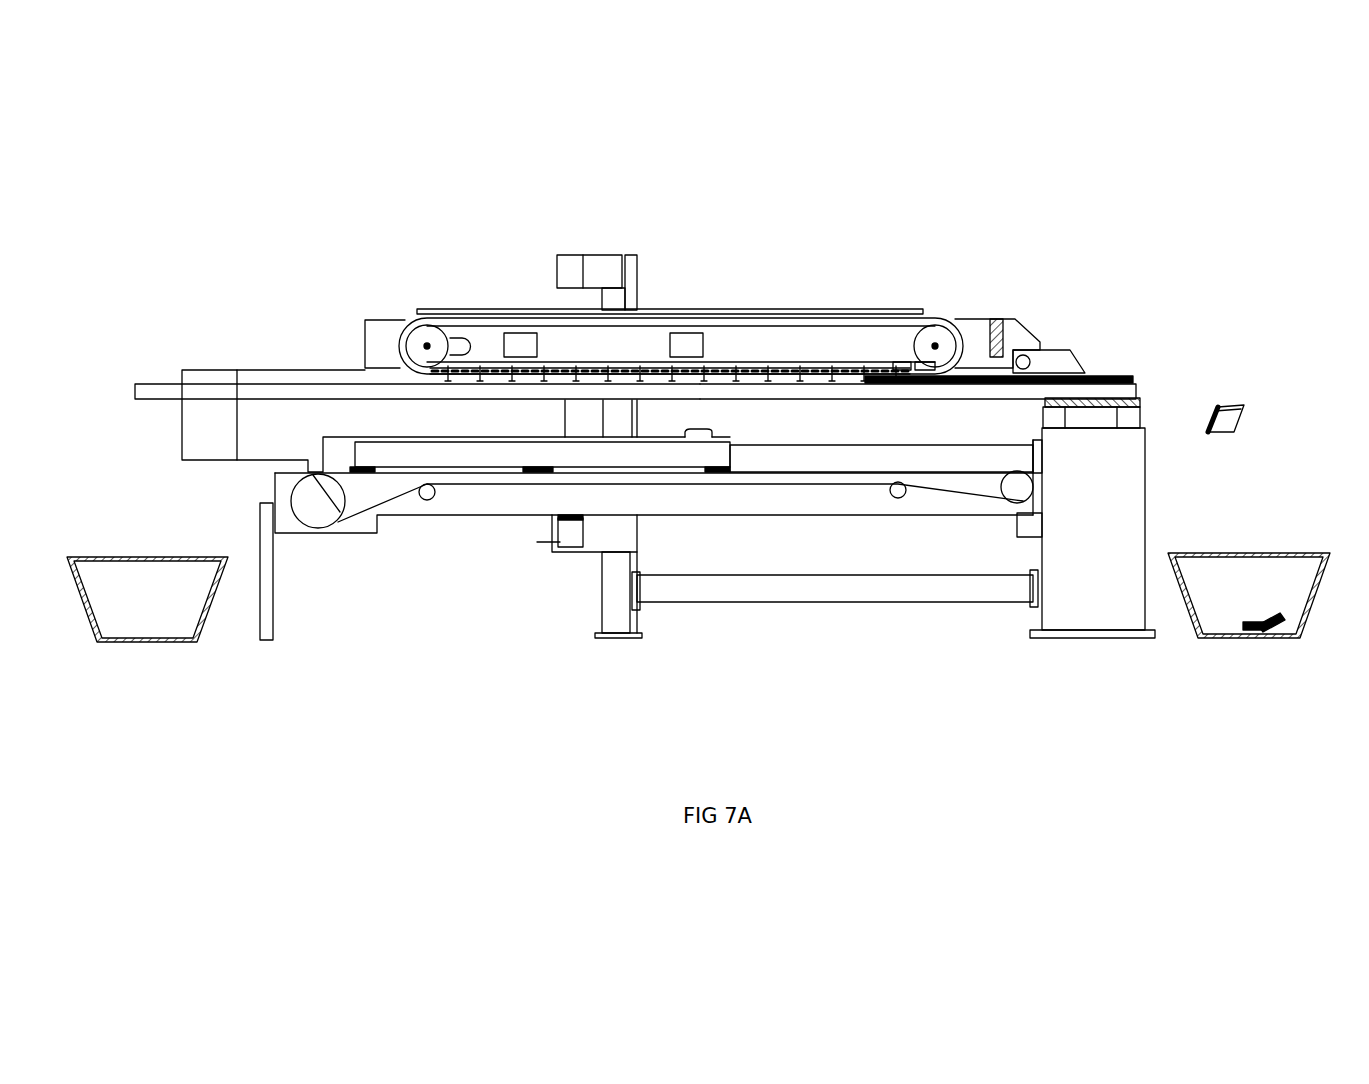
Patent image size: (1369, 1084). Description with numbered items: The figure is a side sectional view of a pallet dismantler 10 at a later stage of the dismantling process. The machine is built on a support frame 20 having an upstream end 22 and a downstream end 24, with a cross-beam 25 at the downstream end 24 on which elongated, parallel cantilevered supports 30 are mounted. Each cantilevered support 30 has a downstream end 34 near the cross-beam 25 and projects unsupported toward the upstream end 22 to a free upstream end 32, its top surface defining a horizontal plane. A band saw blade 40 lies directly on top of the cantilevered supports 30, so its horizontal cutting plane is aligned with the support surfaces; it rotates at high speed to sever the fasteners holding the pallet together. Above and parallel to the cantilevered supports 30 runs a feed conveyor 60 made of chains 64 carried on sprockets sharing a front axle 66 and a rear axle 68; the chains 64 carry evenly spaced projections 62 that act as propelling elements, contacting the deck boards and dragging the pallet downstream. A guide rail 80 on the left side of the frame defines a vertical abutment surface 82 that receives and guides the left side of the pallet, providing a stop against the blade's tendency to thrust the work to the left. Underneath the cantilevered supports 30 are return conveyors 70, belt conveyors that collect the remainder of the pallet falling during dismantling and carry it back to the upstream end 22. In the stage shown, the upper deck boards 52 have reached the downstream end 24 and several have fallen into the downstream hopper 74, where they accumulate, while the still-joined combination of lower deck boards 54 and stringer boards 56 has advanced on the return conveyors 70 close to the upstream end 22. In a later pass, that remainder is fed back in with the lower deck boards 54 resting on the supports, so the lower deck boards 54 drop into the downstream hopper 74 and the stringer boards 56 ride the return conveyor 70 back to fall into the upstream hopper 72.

The pallet dismantler 10 is at (1138, 277).
The support frame 20 is at (826, 610).
The upstream end 22 is at (260, 560).
The downstream end 24 is at (1145, 470).
The cross-beam 25 is at (1140, 410).
The cantilevered supports 30 is at (702, 393).
The upstream end of cantilevered support 32 is at (133, 392).
The downstream end of cantilevered support 34 is at (1140, 390).
The band saw blade 40 is at (558, 380).
The upper deck boards 52 is at (1105, 374).
The lower deck boards 54 is at (352, 467).
The stringer boards 56 is at (473, 460).
The feed conveyor 60 is at (787, 308).
The projections 62 is at (863, 377).
The chains 64 is at (913, 380).
The front axle 66 is at (427, 346).
The rear axle 68 is at (935, 346).
The return conveyors 70 is at (828, 482).
The upstream hopper 72 is at (210, 622).
The downstream hopper 74 is at (1192, 620).
The guide rail 80 is at (208, 456).
The vertical abutment surface 82 is at (300, 441).